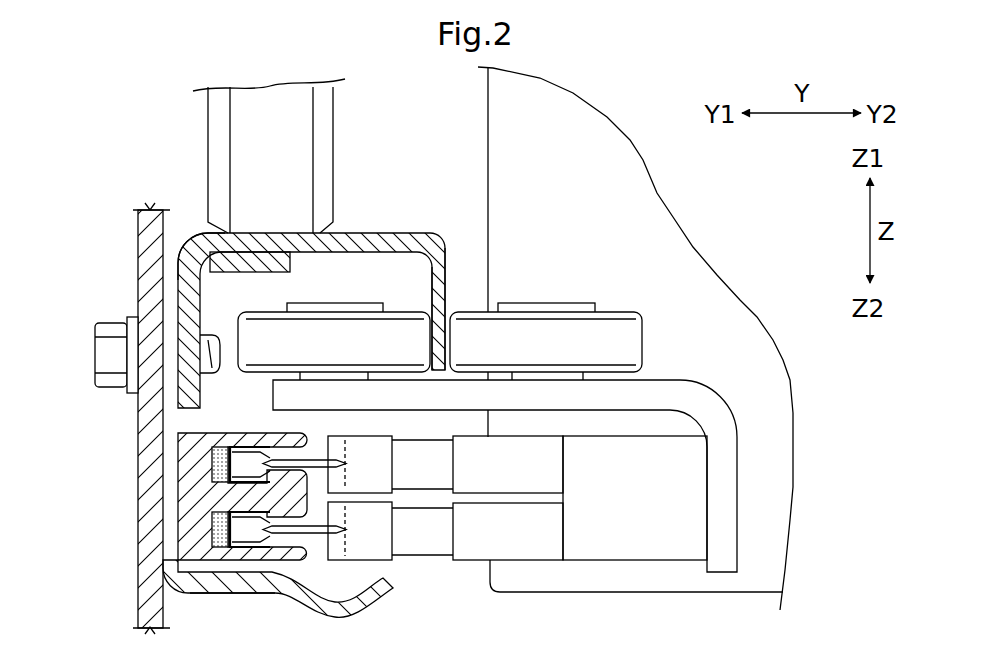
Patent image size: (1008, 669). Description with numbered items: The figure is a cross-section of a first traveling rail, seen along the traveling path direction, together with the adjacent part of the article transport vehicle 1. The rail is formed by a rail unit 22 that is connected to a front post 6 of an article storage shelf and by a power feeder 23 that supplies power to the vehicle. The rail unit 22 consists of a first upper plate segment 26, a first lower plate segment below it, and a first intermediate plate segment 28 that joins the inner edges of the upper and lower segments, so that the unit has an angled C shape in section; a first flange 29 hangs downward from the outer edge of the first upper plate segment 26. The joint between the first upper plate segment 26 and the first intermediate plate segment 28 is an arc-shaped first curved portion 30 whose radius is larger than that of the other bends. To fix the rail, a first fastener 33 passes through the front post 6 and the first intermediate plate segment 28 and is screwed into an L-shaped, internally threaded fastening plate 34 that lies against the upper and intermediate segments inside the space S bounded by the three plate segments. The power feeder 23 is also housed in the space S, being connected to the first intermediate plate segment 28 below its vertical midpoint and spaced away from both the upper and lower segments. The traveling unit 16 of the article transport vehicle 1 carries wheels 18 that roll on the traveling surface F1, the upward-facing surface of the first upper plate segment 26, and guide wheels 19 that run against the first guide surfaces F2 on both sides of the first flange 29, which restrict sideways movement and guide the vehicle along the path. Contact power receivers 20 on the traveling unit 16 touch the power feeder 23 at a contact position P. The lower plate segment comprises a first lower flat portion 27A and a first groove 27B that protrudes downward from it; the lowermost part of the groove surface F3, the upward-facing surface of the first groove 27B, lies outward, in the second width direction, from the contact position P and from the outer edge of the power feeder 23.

The article transport vehicle 1 is at (460, 107).
The front post 6 is at (162, 540).
The traveling unit 16 is at (493, 167).
The wheel 18 is at (322, 132).
The guide wheel 19 is at (350, 340).
The contact power receiver 20 is at (373, 540).
The rail unit 22 is at (252, 611).
The power feeder 23 is at (200, 487).
The first upper plate segment 26 is at (342, 240).
The first lower flat portion 27A is at (235, 594).
The first groove 27B is at (373, 611).
The first intermediate plate segment 28 is at (182, 455).
The first flange 29 is at (443, 254).
The first curved portion 30 is at (193, 250).
The first fastener 33 is at (103, 353).
The fastening plate 34 is at (192, 284).
The traveling surface F1 is at (375, 230).
The first guide surface F2 is at (428, 289).
The groove surface F3 is at (341, 599).
The contact position P is at (272, 460).
The space S is at (219, 414).